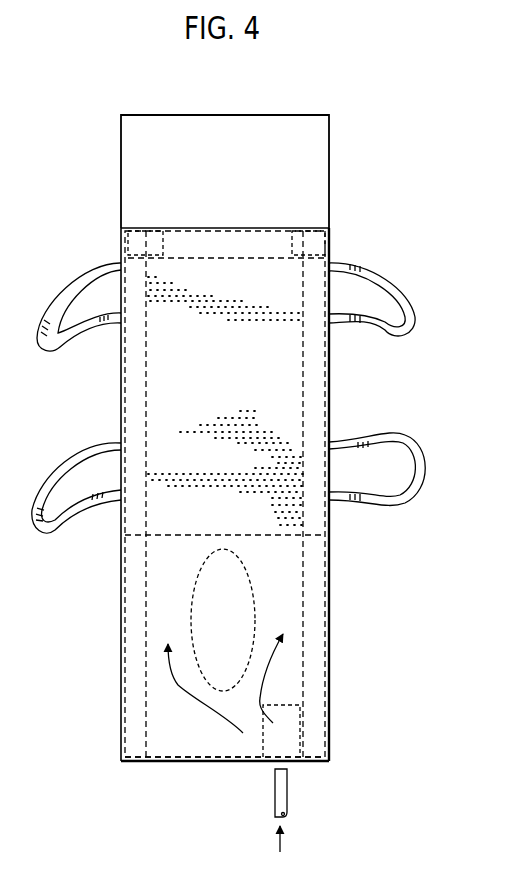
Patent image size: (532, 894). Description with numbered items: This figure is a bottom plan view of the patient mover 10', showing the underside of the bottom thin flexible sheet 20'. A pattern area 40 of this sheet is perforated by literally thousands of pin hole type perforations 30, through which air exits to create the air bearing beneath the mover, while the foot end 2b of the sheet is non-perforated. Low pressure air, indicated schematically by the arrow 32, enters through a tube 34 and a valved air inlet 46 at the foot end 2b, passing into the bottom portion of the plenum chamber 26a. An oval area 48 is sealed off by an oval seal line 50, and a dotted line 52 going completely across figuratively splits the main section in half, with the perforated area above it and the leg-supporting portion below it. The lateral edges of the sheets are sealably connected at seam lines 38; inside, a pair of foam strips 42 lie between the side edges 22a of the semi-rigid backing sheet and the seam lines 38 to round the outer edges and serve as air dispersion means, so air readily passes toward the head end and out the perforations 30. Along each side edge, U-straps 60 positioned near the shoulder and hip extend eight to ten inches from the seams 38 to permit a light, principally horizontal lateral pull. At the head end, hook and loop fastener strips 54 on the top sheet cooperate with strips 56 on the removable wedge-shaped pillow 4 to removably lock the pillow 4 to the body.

The removable pillow 4 is at (119, 166).
The hook and loop type fastener strips 56 is at (162, 237).
The hook and loop type fastener strips 54 is at (288, 243).
The patient mover 10' is at (381, 212).
The side edges of semi-rigid plastic sheet 22a is at (117, 243).
The U-straps 60 is at (42, 330).
The pin hole type perforations 30 is at (248, 320).
The perforated pattern area 40 is at (277, 382).
The foam strips 42 is at (135, 378).
The dotted line 52 is at (200, 538).
The oval seal line 50 is at (250, 573).
The oval area 48 is at (242, 611).
The bottom thin flexible sheet 20' is at (190, 494).
The seam line 38 is at (119, 693).
The foot end 2b is at (116, 759).
The bottom portion of plenum chamber 26a is at (177, 735).
The valved air inlet 46 is at (262, 738).
The tube 34 is at (288, 801).
The air stream 32 is at (280, 848).